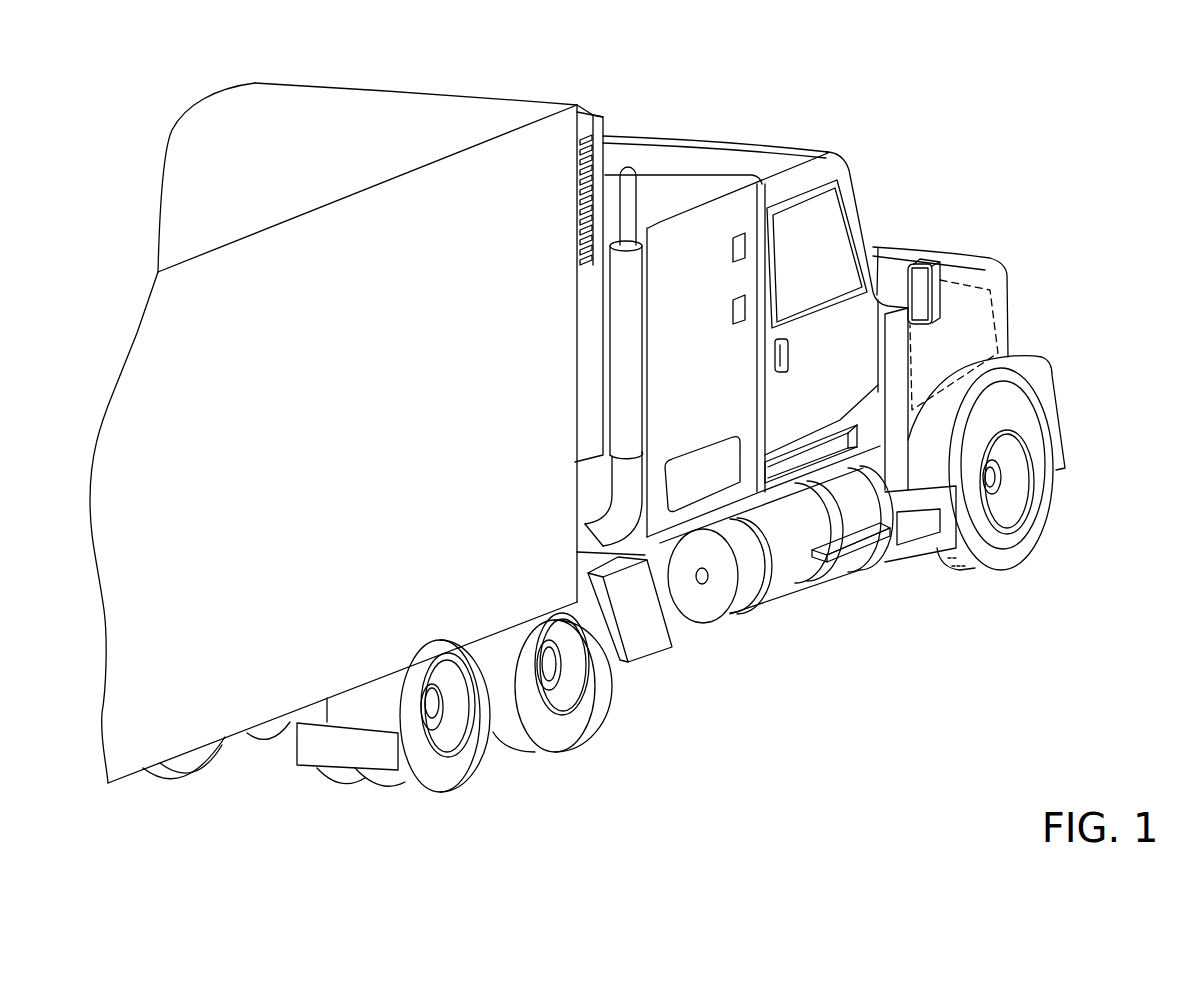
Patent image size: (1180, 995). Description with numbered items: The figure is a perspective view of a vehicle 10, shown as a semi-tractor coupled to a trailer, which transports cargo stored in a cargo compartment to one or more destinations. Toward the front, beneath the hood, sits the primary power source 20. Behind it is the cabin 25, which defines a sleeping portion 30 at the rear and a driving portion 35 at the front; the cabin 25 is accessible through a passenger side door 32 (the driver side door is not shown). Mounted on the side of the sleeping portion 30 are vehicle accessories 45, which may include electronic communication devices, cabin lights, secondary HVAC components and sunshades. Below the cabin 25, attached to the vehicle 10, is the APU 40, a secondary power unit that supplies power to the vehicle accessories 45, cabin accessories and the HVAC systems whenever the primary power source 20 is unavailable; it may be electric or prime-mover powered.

The vehicle 10 is at (615, 433).
The primary power source 20 is at (1007, 313).
The cabin 25 is at (860, 197).
The sleeping portion 30 is at (722, 216).
The passenger side door 32 is at (855, 320).
The driving portion 35 is at (826, 351).
The APU 40 is at (650, 600).
The vehicle accessories 45 is at (732, 249).